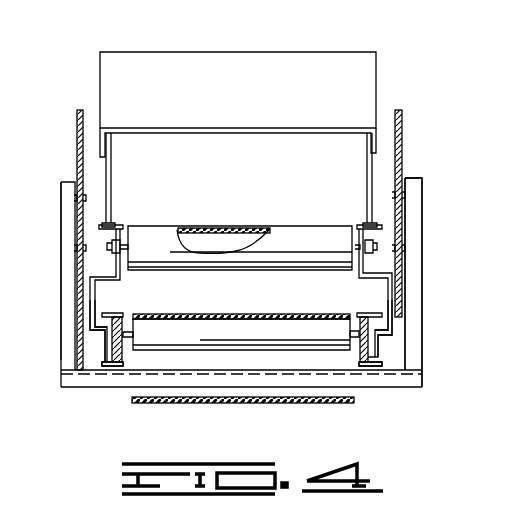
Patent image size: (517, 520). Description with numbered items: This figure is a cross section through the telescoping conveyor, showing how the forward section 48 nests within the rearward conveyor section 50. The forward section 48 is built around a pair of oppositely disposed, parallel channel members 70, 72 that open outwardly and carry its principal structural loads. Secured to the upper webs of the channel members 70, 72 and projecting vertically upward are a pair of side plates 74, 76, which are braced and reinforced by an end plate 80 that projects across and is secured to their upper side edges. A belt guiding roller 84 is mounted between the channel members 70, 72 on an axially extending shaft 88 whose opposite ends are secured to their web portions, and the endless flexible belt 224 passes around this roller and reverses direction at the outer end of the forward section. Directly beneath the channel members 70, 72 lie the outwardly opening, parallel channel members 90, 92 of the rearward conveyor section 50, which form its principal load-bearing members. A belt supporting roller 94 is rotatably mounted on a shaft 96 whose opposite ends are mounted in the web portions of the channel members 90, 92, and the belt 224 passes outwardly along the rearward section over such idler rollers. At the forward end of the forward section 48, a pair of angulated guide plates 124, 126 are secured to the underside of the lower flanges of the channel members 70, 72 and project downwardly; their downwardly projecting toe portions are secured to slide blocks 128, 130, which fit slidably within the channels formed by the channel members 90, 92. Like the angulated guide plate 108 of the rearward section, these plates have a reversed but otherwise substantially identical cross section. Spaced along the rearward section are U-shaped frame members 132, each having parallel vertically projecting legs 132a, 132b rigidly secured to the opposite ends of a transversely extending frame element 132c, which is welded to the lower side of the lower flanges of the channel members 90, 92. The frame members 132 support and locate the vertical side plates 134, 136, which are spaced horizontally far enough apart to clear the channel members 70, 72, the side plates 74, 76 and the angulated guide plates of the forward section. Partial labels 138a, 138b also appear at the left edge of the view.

The forward section 48 is at (102, 48).
The end plate 80 is at (246, 93).
The side plate 74 is at (111, 168).
The side plate 76 is at (366, 168).
The channel member 70 is at (122, 227).
The channel member 72 is at (358, 224).
The belt guiding roller 84 is at (200, 245).
The endless flexible belt 224 is at (285, 240).
The shaft 88 is at (127, 247).
The shaft 96 is at (354, 334).
The channel member 90 is at (113, 317).
The channel member 92 is at (364, 313).
The belt supporting roller 94 is at (167, 327).
The angulated guide plate 124 is at (105, 336).
The angulated guide plate 126 is at (390, 332).
The slide block 128 is at (117, 364).
The slide block 130 is at (370, 364).
The side plate 134 is at (80, 110).
The side plate 136 is at (401, 118).
The U-shaped frame member 132 is at (430, 232).
The vertically projecting leg 132a is at (64, 190).
The vertically projecting leg 132b is at (416, 190).
The transversely extending frame element 132c is at (157, 382).
The rearward conveyor section 50 is at (426, 390).
The lower panel 138a is at (30, 330).
The upper panel 138b is at (30, 226).
The angulated guide plate 108 is at (30, 275).